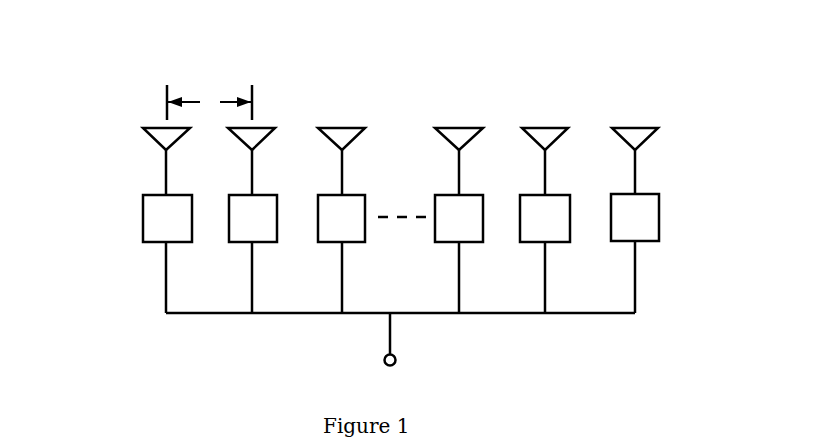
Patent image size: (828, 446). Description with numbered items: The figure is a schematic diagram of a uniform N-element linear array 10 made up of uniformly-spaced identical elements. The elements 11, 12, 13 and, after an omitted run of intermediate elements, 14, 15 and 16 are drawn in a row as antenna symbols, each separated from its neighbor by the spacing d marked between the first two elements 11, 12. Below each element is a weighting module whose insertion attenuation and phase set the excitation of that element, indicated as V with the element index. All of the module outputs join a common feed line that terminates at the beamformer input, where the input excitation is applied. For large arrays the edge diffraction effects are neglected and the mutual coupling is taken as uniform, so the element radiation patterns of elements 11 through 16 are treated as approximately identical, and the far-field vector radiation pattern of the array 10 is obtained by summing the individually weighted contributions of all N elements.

The array 10 is at (120, 212).
The element 11 is at (145, 118).
The element 12 is at (260, 118).
The element 13 is at (345, 117).
The element 14 is at (463, 117).
The element 15 is at (548, 117).
The element 16 is at (633, 117).